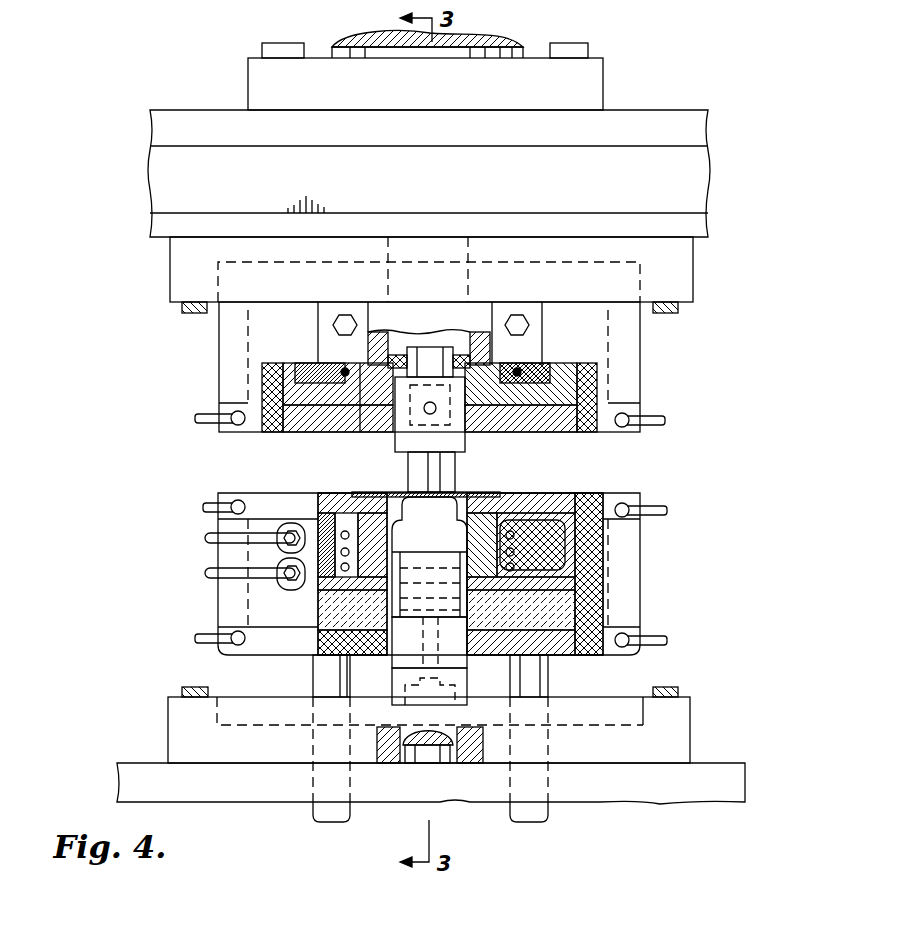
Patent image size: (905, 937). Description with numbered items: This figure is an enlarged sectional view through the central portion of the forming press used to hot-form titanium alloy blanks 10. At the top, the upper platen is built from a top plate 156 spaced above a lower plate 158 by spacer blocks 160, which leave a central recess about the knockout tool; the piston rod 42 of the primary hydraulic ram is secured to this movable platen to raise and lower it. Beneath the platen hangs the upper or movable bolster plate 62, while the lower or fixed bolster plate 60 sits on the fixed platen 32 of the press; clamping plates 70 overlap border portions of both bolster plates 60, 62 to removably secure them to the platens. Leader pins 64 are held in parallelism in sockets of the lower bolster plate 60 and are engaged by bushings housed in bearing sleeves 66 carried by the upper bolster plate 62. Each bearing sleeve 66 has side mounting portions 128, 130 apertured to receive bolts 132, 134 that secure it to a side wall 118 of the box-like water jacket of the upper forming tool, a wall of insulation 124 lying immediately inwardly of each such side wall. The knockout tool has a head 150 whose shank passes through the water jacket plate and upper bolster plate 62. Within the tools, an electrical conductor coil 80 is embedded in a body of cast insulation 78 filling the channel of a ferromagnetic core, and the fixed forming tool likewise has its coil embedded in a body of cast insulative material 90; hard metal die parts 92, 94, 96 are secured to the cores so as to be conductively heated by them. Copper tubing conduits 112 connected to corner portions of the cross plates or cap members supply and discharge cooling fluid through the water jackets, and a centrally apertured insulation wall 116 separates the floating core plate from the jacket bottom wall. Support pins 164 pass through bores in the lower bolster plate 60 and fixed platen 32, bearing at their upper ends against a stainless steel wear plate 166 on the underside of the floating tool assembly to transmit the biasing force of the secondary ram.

The titanium alloy blank 10 is at (356, 492).
The fixed platen 32 is at (638, 796).
The piston rod 42 is at (515, 46).
The lower bolster plate 60 is at (686, 726).
The upper bolster plate 62 is at (170, 290).
The leader pin 64 is at (455, 470).
The bearing sleeve 66 is at (455, 316).
The clamping plate 70 is at (190, 314).
The body of cast insulation 78 is at (540, 420).
The electrical conductor coil 80 is at (345, 378).
The body of cast insulative material 90 is at (396, 624).
The hard metal die part 92 is at (300, 434).
The hard metal die part 94 is at (540, 505).
The hard metal die part 96 is at (420, 542).
The copper tubing conduit 112 is at (200, 420).
The centrally apertured wall 116 is at (376, 618).
The side wall 118 is at (625, 366).
The wall of insulation 124 is at (276, 434).
The side mounting portion 128 is at (328, 345).
The side mounting portion 130 is at (530, 348).
The bolt 132 is at (332, 325).
The bolt 134 is at (529, 325).
The head 150 is at (394, 444).
The top plate 156 is at (193, 122).
The lower plate 158 is at (150, 232).
The spacer block 160 is at (150, 185).
The support pin 164 is at (318, 682).
The wear plate 166 is at (246, 658).